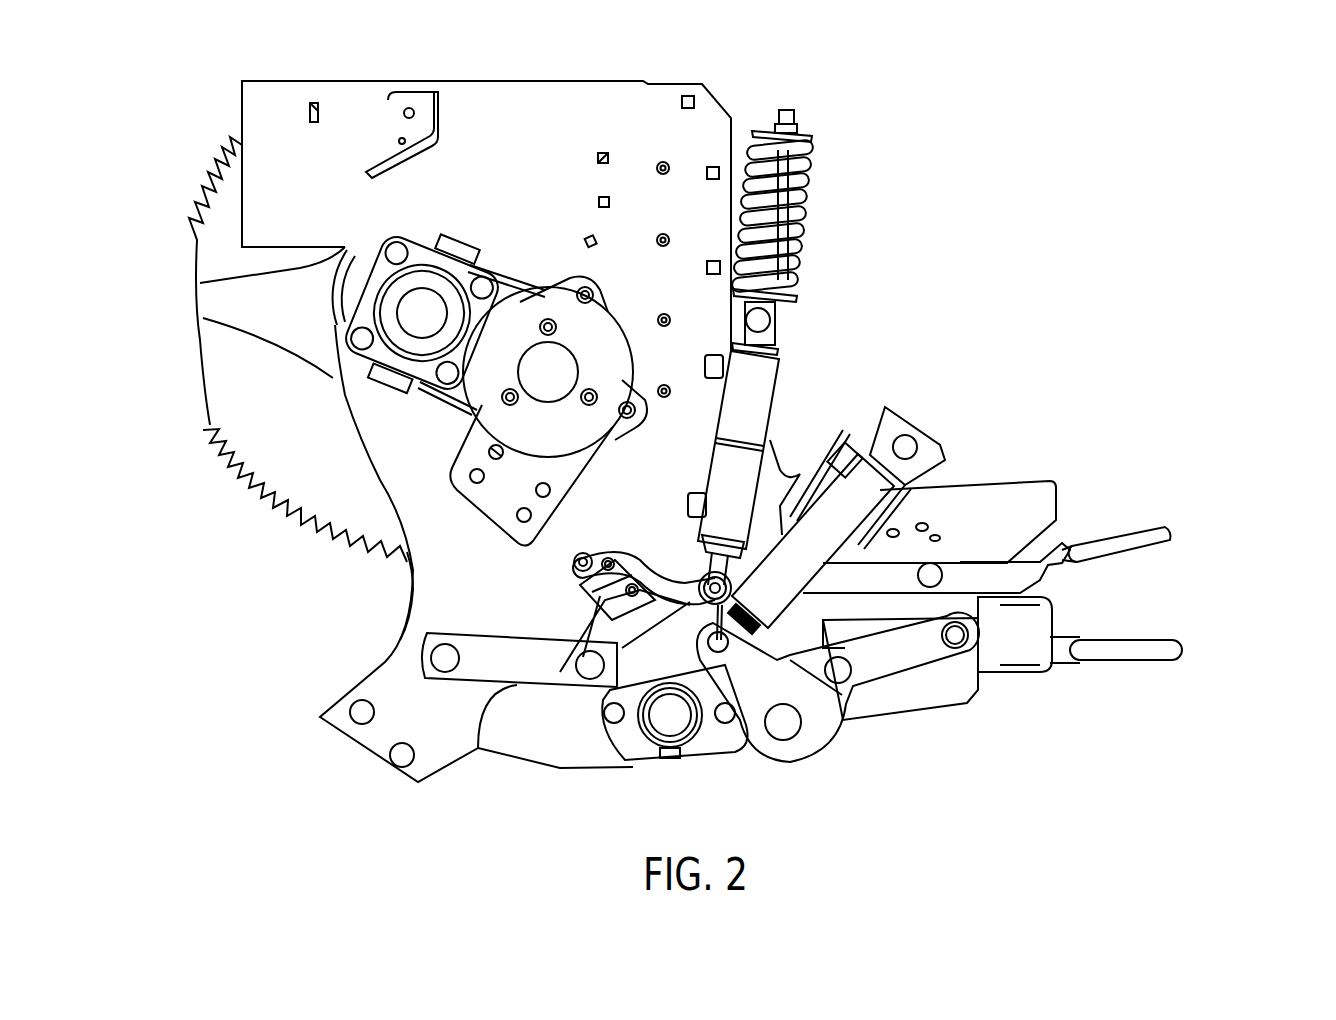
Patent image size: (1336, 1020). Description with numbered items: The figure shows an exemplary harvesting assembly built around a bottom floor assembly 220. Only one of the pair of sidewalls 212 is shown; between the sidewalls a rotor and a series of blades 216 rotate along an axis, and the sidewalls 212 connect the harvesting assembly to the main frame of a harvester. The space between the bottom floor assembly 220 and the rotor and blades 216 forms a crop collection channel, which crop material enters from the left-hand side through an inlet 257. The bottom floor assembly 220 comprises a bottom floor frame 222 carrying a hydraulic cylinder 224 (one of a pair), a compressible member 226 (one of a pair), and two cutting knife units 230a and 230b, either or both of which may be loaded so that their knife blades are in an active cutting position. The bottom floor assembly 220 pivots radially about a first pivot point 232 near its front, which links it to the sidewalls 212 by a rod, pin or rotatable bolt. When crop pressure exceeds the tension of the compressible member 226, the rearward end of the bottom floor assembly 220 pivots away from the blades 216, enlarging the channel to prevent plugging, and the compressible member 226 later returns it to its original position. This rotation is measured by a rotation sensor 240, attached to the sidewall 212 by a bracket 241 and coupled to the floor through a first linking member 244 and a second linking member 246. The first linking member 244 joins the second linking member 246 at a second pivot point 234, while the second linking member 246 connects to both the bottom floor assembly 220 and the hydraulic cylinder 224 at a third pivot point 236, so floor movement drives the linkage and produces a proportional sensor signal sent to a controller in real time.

The sidewall 212 is at (556, 102).
The rotor and series of blades 216 is at (213, 365).
The bottom floor assembly 220 is at (993, 695).
The bottom floor frame 222 is at (1000, 495).
The hydraulic cylinder 224 is at (760, 385).
The compressible member 226 is at (800, 213).
The cutting knife unit 230a is at (1163, 527).
The cutting knife unit 230b is at (1183, 649).
The first pivot point 232 is at (443, 662).
The second pivot point 234 is at (575, 565).
The third pivot point 236 is at (745, 735).
The rotation sensor 240 is at (600, 605).
The bracket 241 is at (590, 592).
The first linking member 244 is at (596, 546).
The second linking member 246 is at (650, 665).
The inlet 257 is at (410, 606).